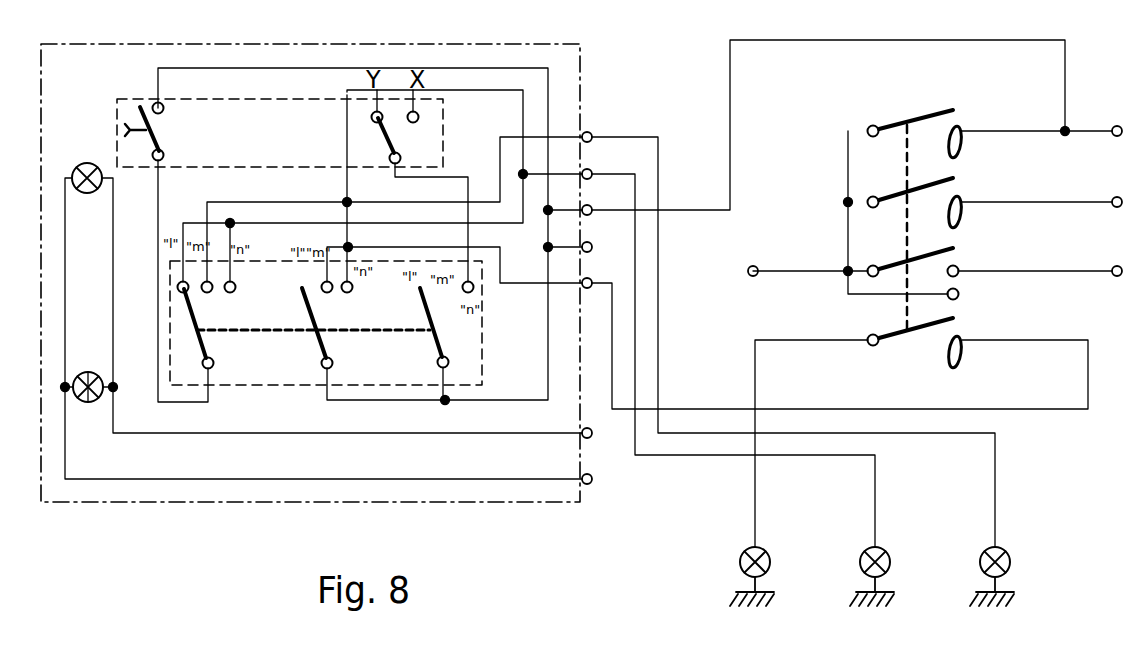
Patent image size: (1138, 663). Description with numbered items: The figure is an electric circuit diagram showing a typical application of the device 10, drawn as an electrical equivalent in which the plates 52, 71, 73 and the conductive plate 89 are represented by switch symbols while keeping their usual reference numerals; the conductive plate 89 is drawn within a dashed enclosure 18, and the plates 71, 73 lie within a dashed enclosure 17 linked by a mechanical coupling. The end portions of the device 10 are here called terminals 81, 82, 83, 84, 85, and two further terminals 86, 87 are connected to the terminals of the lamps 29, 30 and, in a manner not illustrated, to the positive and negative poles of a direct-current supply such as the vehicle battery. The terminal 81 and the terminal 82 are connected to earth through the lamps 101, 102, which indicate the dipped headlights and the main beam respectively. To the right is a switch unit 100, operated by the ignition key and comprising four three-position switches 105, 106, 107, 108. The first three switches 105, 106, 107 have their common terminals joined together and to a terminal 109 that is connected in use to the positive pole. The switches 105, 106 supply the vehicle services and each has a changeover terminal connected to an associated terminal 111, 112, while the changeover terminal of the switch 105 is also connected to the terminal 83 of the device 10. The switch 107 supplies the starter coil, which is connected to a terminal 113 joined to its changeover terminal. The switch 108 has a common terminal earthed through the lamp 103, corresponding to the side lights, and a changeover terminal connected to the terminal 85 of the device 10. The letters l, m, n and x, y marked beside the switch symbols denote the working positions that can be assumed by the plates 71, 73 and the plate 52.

The device 10 is at (124, 505).
The switching device 17 is at (250, 373).
The switch unit 18 is at (128, 98).
The lamp 29 is at (89, 371).
The lamp 30 is at (86, 163).
The plate 52 is at (388, 142).
The plate 71 is at (199, 322).
The plate 73 is at (437, 341).
The terminal 81 is at (591, 133).
The terminal 82 is at (591, 170).
The terminal 83 is at (591, 206).
The terminal 84 is at (591, 243).
The terminal 85 is at (591, 279).
The terminal 86 is at (591, 437).
The terminal 87 is at (591, 483).
The conductive plate 89 is at (160, 135).
The switch unit 100 is at (822, 177).
The lamp 101 is at (1011, 560).
The lamp 102 is at (891, 560).
The lamp 103 is at (788, 552).
The three-position switch 105 is at (933, 110).
The three-position switch 106 is at (932, 180).
The three-position switch 107 is at (930, 248).
The three-position switch 108 is at (934, 318).
The terminal 109 is at (756, 266).
The terminal 111 is at (1117, 125).
The terminal 112 is at (1117, 196).
The terminal 113 is at (1117, 265).